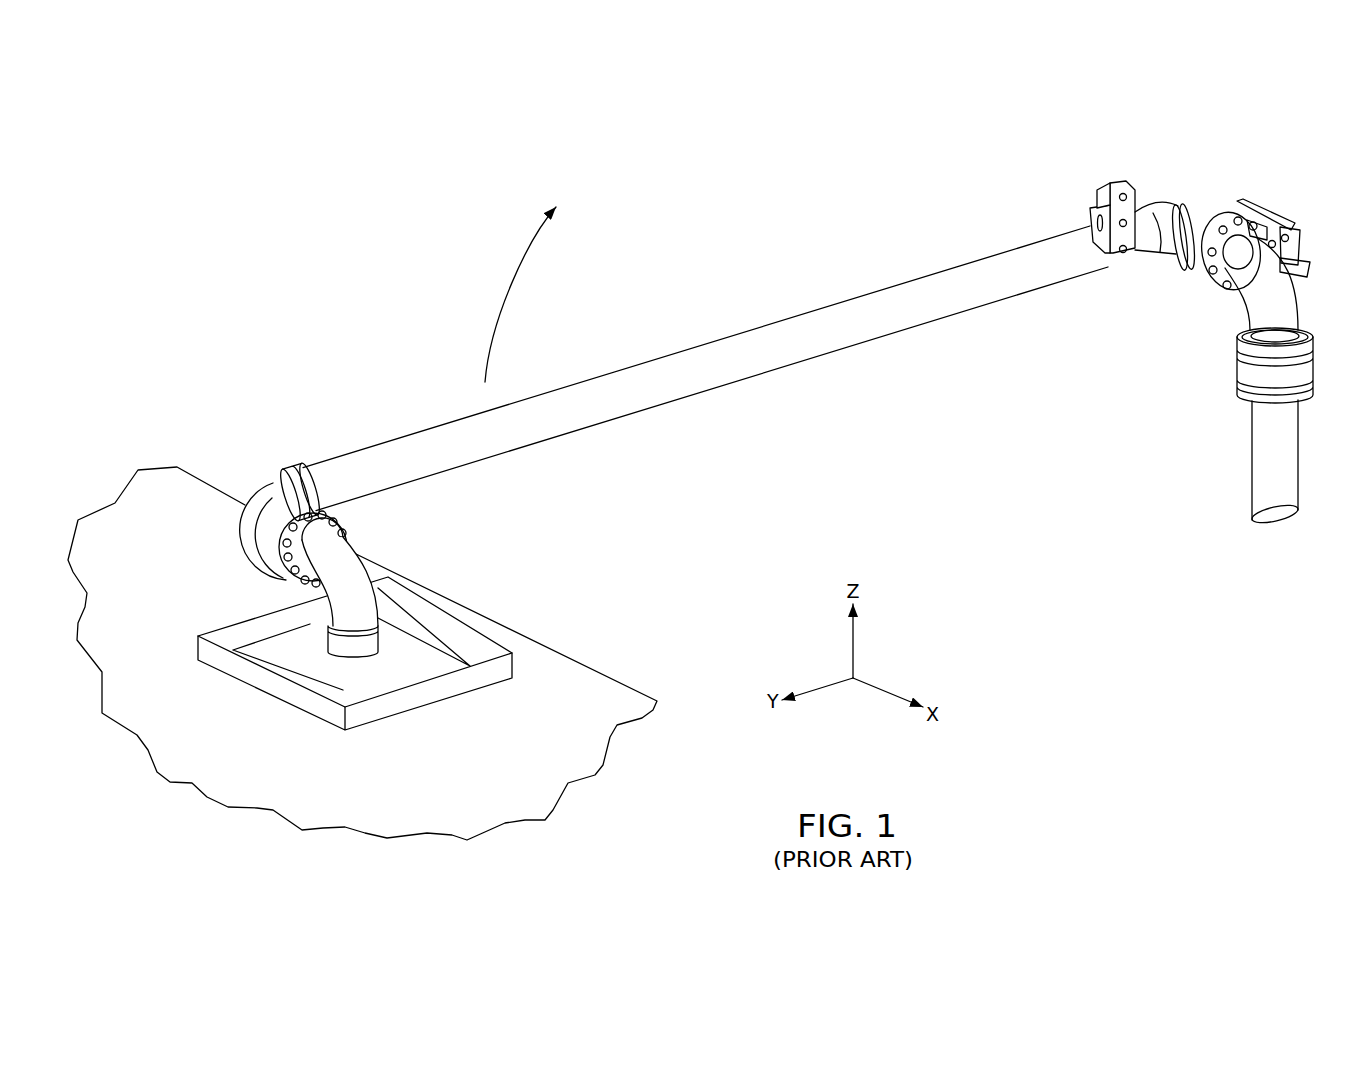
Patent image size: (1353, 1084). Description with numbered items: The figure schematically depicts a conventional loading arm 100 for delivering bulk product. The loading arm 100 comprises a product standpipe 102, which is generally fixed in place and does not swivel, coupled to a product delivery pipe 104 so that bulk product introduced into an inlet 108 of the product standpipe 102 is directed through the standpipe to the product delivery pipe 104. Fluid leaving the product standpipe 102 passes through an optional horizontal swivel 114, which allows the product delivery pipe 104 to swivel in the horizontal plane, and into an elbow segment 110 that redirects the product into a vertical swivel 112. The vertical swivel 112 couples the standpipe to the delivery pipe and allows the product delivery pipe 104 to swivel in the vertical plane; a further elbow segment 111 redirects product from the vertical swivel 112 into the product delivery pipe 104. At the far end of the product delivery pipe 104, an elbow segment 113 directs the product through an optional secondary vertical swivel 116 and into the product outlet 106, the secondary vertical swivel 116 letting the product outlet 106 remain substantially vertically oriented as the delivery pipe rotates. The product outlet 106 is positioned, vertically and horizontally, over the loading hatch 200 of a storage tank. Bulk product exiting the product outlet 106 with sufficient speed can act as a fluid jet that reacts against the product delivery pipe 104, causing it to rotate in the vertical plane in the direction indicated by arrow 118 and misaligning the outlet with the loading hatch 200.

The loading arm 100 is at (745, 418).
The product standpipe 102 is at (1218, 509).
The product delivery pipe 104 is at (886, 286).
The product outlet 106 is at (327, 658).
The inlet 108 is at (1267, 530).
The elbow segment 110 is at (1236, 313).
The elbow segment 111 is at (1184, 199).
The vertical swivel 112 is at (1218, 212).
The elbow segment 113 is at (240, 518).
The horizontal swivel 114 is at (1241, 363).
The secondary vertical swivel 116 is at (260, 562).
The arrow 118 is at (504, 300).
The loading hatch 200 is at (473, 631).